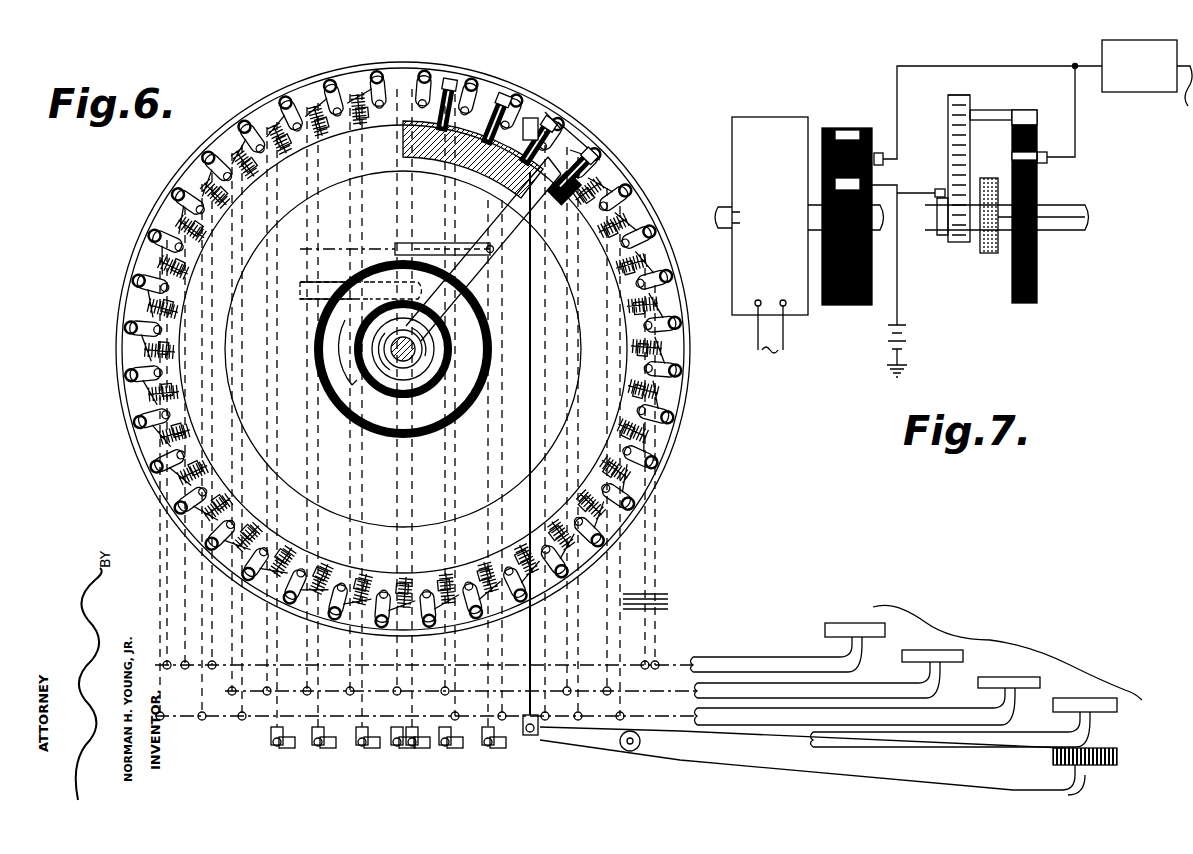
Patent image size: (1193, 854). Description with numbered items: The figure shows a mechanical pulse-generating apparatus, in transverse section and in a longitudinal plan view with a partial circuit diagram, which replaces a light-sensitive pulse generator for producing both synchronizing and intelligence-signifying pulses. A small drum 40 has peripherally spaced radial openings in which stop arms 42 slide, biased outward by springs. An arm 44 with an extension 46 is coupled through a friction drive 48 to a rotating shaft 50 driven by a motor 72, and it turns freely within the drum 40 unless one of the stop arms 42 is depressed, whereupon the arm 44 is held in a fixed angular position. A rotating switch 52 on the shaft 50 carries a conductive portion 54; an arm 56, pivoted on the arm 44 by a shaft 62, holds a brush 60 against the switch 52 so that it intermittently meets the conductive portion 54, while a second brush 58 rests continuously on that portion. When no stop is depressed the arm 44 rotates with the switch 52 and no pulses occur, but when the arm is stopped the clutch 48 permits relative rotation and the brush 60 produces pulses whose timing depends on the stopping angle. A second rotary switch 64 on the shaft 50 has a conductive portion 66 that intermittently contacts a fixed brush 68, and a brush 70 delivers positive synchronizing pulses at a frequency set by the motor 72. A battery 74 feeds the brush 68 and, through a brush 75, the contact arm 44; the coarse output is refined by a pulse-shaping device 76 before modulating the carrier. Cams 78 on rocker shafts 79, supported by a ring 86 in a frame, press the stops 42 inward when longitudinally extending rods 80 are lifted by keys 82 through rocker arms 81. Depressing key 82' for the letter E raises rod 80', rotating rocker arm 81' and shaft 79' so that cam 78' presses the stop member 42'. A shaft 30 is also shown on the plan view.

In FIG. 7, the shaft 30 is at (1062, 230).
In FIG. 6, the drum 40 is at (226, 292).
In FIG. 6, the stop arms 42 is at (473, 161).
In FIG. 6, the depressed stop member 42' is at (525, 184).
In FIG. 6, the arm 44 is at (490, 272).
In FIG. 7, the arm 44 is at (948, 132).
In FIG. 6, the extension 46 is at (531, 248).
In FIG. 7, the extension 46 is at (948, 97).
In FIG. 6, the friction drive 48 is at (436, 356).
In FIG. 7, the friction drive 48 is at (990, 254).
In FIG. 6, the rotating shaft 50 is at (412, 340).
In FIG. 7, the rotating shaft 50 is at (722, 206).
In FIG. 6, the rotating switch 52 is at (455, 414).
In FIG. 7, the rotating switch 52 is at (1037, 284).
In FIG. 6, the conductive portion 54 is at (362, 283).
In FIG. 7, the conductive portion 54 is at (1012, 155).
In FIG. 6, the arm 56 is at (418, 250).
In FIG. 7, the arm 56 is at (1033, 110).
In FIG. 6, the second brush 58 is at (305, 282).
In FIG. 7, the second brush 58 is at (1047, 161).
In FIG. 6, the brush 60 is at (396, 247).
In FIG. 7, the brush 60 is at (1037, 122).
In FIG. 6, the shaft 62 is at (488, 245).
In FIG. 7, the shaft 62 is at (995, 110).
In FIG. 7, the second rotary switch 64 is at (848, 305).
In FIG. 7, the conductive portion 66 is at (852, 130).
In FIG. 7, the fixed brush 68 is at (872, 183).
In FIG. 7, the second brush 70 is at (879, 152).
In FIG. 7, the motor 72 is at (793, 118).
In FIG. 7, the battery 74 is at (910, 333).
In FIG. 7, the brush 75 is at (940, 189).
In FIG. 7, the pulse-shaping device 76 is at (1165, 40).
In FIG. 6, the cam members 78 is at (451, 84).
In FIG. 6, the cam 78' is at (602, 139).
In FIG. 6, the rocker shafts 79 is at (495, 97).
In FIG. 6, the rocker shaft 79' is at (585, 123).
In FIG. 6, the longitudinally extending rods 80 is at (663, 603).
In FIG. 6, the rod 80' is at (532, 254).
In FIG. 6, the rocker arms 81 is at (530, 114).
In FIG. 6, the rocker arm 81' is at (562, 99).
In FIG. 6, the keys 82 is at (917, 676).
In FIG. 6, the key 82' is at (1107, 761).
In FIG. 6, the ring 86 is at (628, 172).